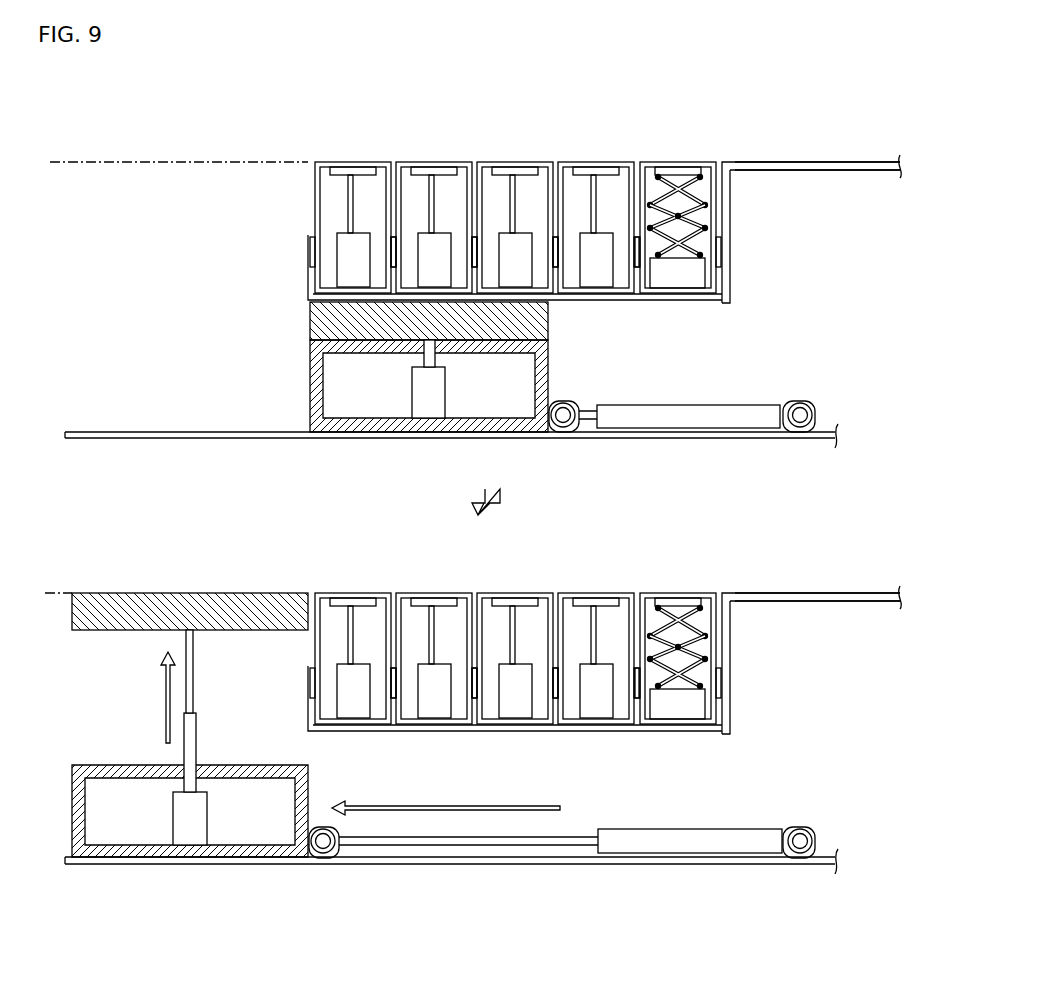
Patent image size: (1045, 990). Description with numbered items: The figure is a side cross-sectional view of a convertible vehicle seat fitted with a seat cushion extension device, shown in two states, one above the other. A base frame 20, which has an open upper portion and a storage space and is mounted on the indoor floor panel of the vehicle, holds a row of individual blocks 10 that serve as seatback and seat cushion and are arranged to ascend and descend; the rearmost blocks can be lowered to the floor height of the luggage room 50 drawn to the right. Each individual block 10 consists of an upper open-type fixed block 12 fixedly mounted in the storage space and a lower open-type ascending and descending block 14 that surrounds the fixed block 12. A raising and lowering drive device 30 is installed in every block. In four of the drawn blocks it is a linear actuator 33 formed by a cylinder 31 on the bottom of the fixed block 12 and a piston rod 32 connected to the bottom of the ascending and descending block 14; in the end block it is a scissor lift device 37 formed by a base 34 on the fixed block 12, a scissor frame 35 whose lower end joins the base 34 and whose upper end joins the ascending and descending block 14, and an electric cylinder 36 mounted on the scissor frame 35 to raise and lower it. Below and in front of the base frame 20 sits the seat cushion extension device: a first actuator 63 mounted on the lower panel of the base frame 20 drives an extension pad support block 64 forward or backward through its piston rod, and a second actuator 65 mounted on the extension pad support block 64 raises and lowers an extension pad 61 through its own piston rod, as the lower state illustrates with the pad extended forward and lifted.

The individual block 10 is at (373, 152).
The fixed block 12 is at (328, 238).
The ascending and descending block 14 is at (318, 162).
The base frame 20 is at (300, 255).
The raising and lowering drive device 30 is at (497, 440).
The cylinder 31 is at (348, 232).
The piston rod 32 is at (348, 272).
The linear actuator 33 is at (400, 467).
The base 34 is at (698, 277).
The scissor frame 35 is at (698, 222).
The electric cylinder 36 is at (700, 248).
The scissor lift device 37 is at (758, 483).
The luggage room 50 is at (826, 163).
The extension pad 61 is at (320, 322).
The first actuator 63 is at (670, 410).
The extension pad support block 64 is at (548, 368).
The second actuator 65 is at (420, 396).